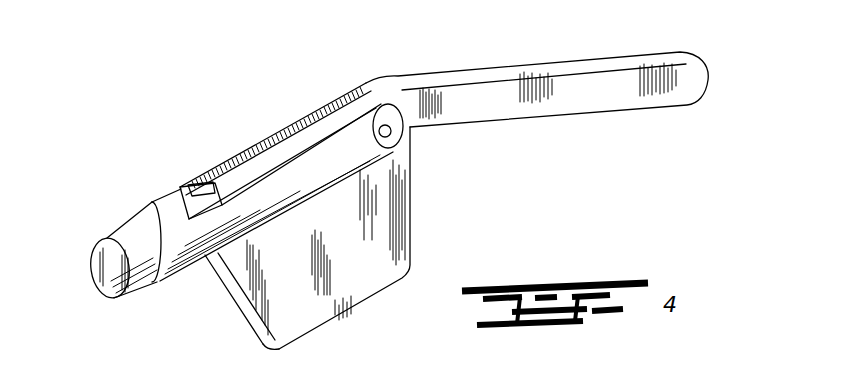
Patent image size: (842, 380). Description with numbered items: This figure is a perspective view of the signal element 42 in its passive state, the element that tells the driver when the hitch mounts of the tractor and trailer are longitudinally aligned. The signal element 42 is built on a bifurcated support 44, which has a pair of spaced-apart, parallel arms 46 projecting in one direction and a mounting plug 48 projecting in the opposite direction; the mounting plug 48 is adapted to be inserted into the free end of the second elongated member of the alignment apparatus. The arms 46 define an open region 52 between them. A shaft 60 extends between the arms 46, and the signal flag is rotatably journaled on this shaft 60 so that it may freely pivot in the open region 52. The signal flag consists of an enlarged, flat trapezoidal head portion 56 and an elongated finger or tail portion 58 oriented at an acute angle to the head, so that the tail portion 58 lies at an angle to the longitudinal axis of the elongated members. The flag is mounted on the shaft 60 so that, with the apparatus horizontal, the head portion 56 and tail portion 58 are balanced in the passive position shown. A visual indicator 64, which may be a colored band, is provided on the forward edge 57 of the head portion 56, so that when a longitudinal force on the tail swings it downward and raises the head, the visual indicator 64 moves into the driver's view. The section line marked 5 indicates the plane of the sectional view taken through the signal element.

The signal element 42 is at (452, 203).
The bifurcated support 44 is at (149, 214).
The arms 46 is at (282, 172).
The mounting plug 48 is at (146, 288).
The open region 52 is at (176, 193).
The head portion 56 is at (411, 209).
The edge 57 is at (267, 337).
The tail portion 58 is at (588, 108).
The shaft 60 is at (391, 134).
The visual indicator 64 is at (240, 309).
The section line 5- 5 is at (737, 79).